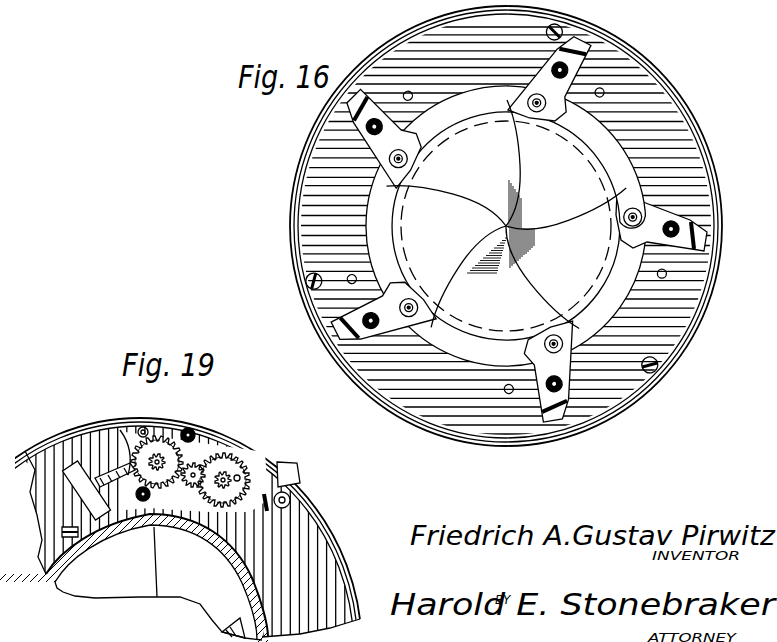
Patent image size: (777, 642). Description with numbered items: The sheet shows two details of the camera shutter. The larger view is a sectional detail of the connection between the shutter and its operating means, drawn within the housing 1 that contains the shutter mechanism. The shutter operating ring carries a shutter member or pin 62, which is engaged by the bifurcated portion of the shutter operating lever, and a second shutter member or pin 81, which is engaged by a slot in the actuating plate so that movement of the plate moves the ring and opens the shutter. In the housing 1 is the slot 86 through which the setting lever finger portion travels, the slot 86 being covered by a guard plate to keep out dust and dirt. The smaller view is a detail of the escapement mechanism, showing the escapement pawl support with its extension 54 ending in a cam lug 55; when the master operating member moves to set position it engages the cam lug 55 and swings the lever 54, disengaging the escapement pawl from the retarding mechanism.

In FIG. 16, the housing 1 is at (657, 68).
In FIG. 19, the housing 1 is at (313, 507).
In FIG. 16, the slot 86 is at (721, 208).
In FIG. 16, the shutter member or pin 62 is at (408, 157).
In FIG. 16, the second shutter member or pin 81 is at (553, 340).
In FIG. 19, the extension 54 is at (107, 482).
In FIG. 19, the cam lug 55 is at (68, 528).